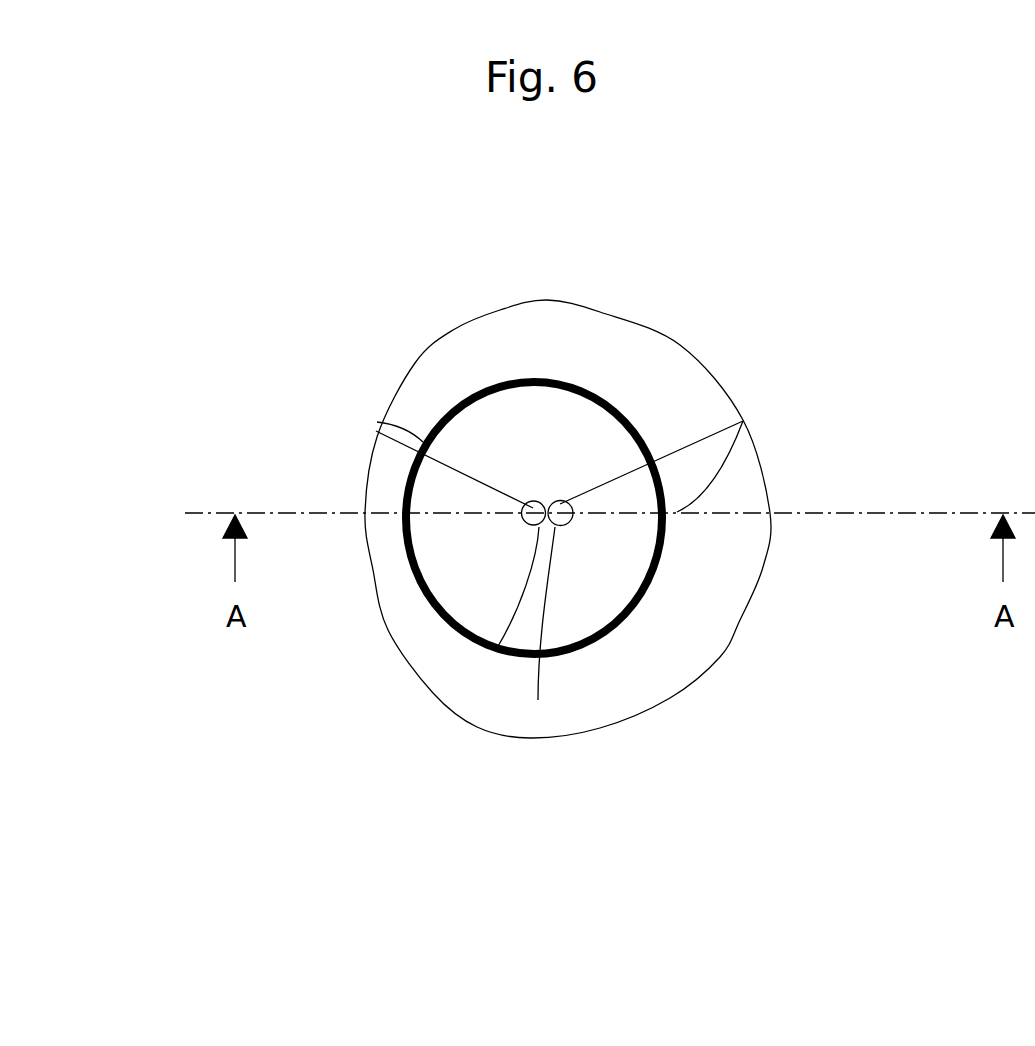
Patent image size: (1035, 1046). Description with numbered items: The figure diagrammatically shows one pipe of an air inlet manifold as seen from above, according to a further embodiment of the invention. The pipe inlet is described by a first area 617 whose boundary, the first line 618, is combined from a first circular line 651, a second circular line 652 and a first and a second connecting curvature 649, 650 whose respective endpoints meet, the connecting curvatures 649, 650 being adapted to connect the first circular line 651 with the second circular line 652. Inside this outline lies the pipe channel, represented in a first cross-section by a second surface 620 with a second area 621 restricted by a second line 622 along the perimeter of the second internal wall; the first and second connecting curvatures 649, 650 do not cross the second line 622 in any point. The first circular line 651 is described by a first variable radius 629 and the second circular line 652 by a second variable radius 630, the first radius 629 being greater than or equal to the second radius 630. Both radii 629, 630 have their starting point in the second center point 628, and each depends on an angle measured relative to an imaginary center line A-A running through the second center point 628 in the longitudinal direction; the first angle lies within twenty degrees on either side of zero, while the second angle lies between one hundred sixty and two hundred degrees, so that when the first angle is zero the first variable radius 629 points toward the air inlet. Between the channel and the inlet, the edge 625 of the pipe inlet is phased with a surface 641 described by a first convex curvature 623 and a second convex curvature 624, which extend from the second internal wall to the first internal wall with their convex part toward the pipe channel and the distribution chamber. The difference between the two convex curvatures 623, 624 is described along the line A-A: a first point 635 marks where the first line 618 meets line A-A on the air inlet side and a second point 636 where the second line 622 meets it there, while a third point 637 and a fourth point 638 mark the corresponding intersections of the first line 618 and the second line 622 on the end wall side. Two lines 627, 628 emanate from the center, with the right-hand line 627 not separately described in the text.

The first area 617 is at (682, 380).
The first line 618 is at (700, 672).
The second surface 620 is at (443, 578).
The second area 621 is at (588, 592).
The second line 622 is at (378, 421).
The first convex curvature 623 is at (717, 540).
The second convex curvature 624 is at (390, 527).
The edge 625 is at (705, 578).
The right thread 627 is at (538, 700).
The second center point 628 is at (497, 648).
The first variable radius 629 is at (680, 448).
The second variable radius 630 is at (450, 474).
The first point 635 is at (775, 513).
The second point 636 is at (741, 421).
The third point 637 is at (355, 513).
The fourth point 638 is at (403, 495).
The surface 641 is at (470, 687).
The first connecting curvature 649 is at (532, 302).
The second connecting curvature 650 is at (503, 723).
The first circular line 651 is at (762, 460).
The second circular line 652 is at (390, 528).